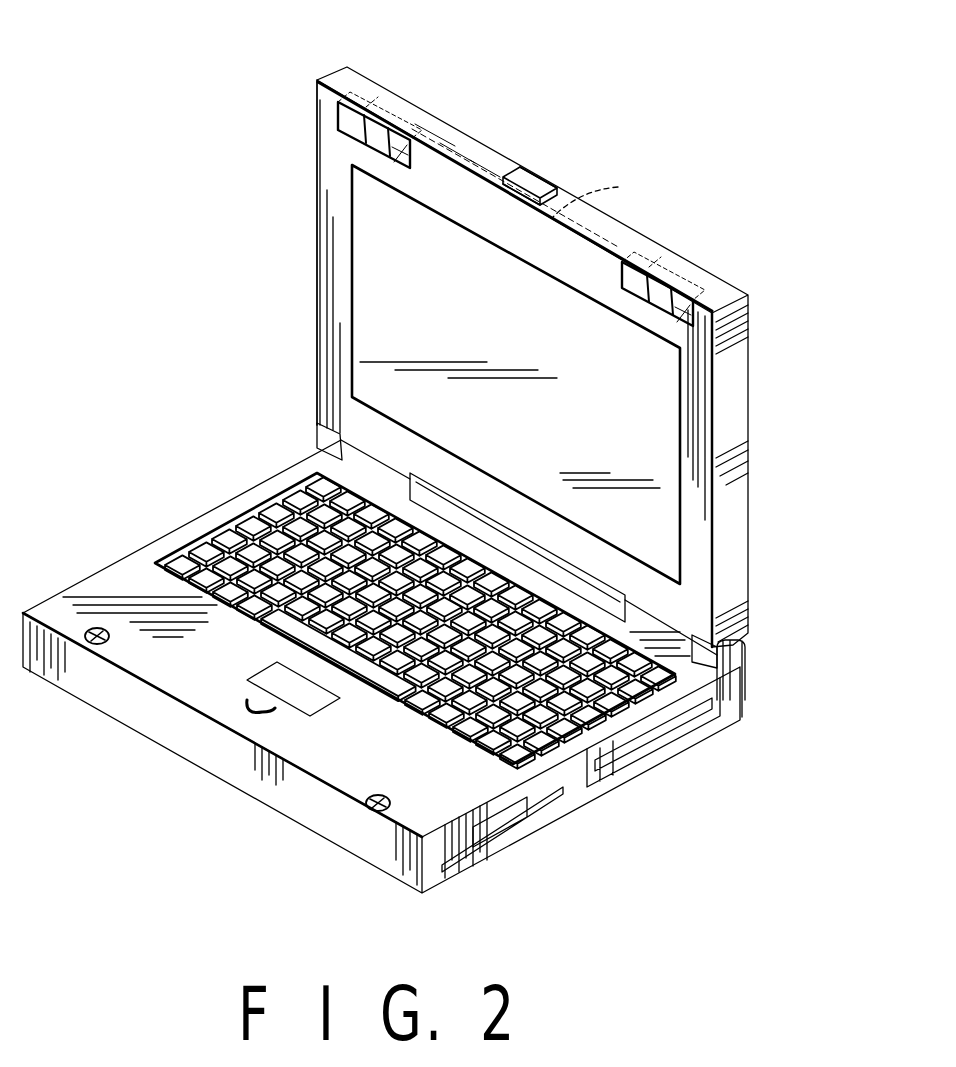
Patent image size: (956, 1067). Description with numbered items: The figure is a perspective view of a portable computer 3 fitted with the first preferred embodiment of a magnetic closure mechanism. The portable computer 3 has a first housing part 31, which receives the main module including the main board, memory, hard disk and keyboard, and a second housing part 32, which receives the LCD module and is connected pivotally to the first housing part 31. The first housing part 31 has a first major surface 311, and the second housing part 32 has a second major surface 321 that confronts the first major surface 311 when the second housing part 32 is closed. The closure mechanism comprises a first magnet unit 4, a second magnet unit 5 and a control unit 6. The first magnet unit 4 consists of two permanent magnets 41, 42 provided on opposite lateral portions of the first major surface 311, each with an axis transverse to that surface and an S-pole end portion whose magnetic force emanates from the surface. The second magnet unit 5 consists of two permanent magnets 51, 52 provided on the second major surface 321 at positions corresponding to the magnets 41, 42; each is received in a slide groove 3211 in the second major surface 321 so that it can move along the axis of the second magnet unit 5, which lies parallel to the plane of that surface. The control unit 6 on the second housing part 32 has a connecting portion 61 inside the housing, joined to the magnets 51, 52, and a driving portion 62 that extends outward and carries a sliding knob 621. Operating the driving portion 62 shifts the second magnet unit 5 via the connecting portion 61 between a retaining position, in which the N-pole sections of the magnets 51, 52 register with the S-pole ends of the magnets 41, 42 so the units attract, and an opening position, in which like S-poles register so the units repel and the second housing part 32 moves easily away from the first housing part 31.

The portable computer 3 is at (298, 323).
The first housing part 31 is at (237, 772).
The first major surface 311 is at (472, 795).
The second housing part 32 is at (727, 440).
The second major surface 321 is at (377, 236).
The slide groove 3211 is at (413, 133).
The first magnet unit 4 is at (280, 866).
The permanent magnet 41 is at (372, 808).
The permanent magnet 42 is at (108, 645).
The second magnet unit 5 is at (372, 63).
The permanent magnet 51 is at (636, 250).
The permanent magnet 52 is at (338, 128).
The control unit 6 is at (541, 149).
The connecting portion 61 is at (483, 165).
The driving portion 62 is at (602, 189).
The sliding knob 621 is at (541, 178).